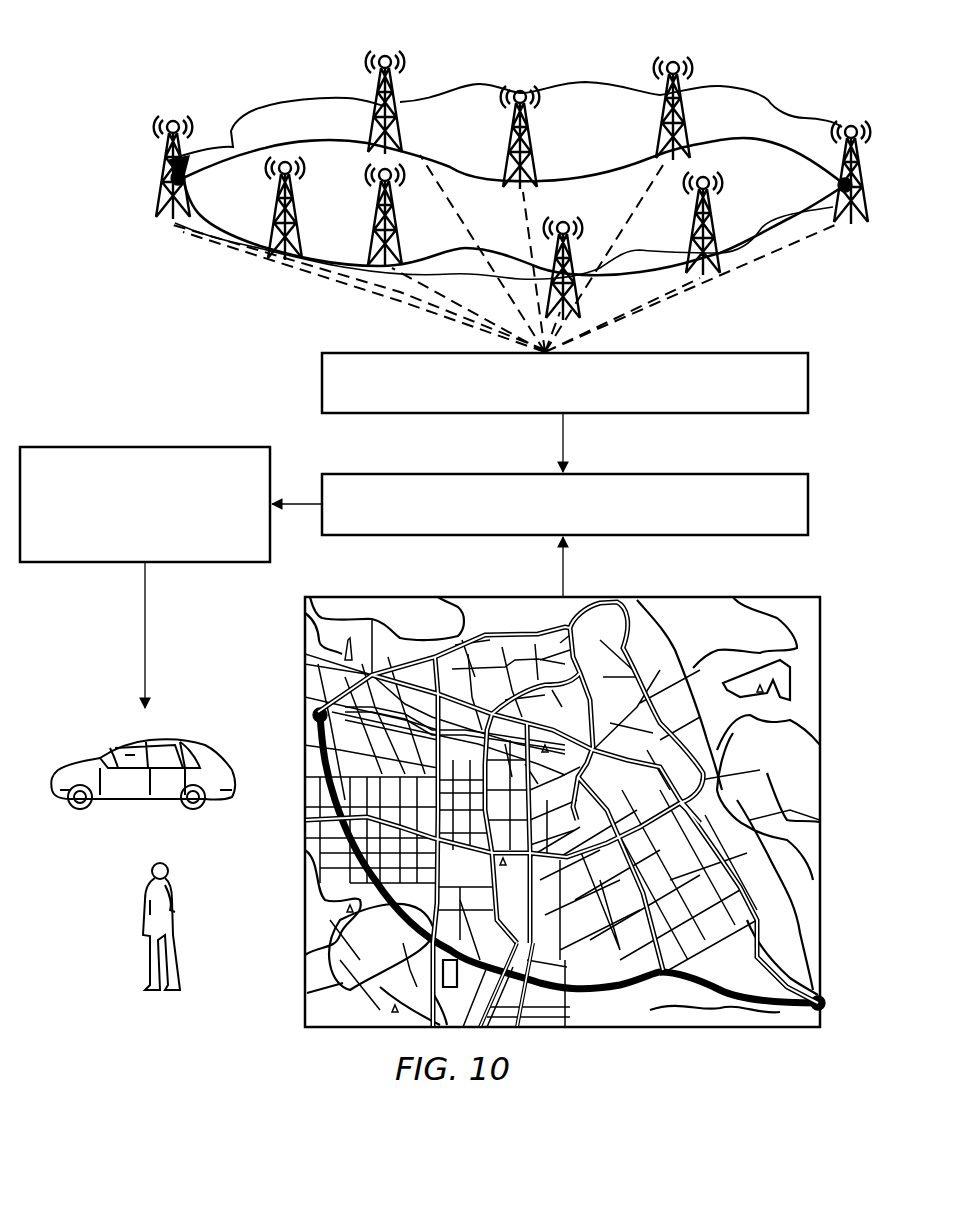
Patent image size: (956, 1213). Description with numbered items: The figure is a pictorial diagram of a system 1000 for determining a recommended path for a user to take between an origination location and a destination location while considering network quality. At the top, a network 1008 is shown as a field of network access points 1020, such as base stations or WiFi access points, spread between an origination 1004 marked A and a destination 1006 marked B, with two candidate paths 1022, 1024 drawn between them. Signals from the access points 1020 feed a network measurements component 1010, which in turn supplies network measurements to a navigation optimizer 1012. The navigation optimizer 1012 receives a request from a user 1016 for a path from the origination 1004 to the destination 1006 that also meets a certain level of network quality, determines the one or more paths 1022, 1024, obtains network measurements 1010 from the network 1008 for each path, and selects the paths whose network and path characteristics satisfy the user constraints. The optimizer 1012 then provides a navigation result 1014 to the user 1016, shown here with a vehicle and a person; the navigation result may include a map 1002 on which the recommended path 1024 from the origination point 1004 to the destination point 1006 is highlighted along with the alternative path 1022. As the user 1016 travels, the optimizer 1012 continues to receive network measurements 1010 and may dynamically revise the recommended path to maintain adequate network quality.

The system 1000 is at (180, 63).
The map 1002 is at (303, 913).
The origination 1004 is at (172, 175).
The destination 1006 is at (838, 187).
The network 1008 is at (309, 99).
The network measurements component 1010 is at (738, 414).
The navigation optimizer 1012 is at (738, 536).
The navigation result 1014 is at (208, 563).
The user 1016 is at (190, 743).
The network access points 1020 is at (166, 118).
The path 1022 is at (793, 157).
The recommended path 1024 is at (217, 220).